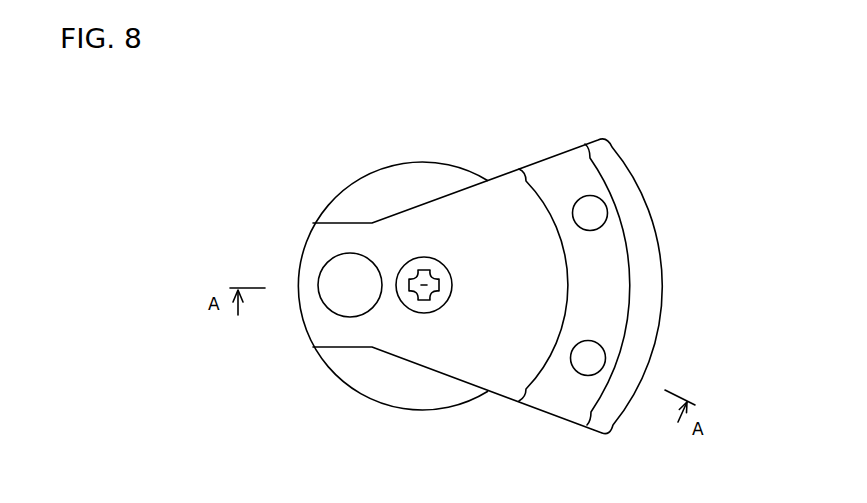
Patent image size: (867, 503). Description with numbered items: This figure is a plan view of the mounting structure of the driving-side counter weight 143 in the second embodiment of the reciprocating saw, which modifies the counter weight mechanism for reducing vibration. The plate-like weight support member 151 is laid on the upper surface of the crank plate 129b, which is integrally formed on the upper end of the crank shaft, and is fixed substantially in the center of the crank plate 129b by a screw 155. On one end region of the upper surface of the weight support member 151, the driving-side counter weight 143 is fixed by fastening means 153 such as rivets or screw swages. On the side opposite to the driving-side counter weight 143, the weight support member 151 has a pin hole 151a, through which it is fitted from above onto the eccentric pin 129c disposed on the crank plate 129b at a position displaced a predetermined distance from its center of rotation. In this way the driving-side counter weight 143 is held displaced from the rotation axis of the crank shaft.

The weight support member 151 is at (481, 192).
The crank plate 129b is at (377, 183).
The eccentric pin 129c is at (338, 273).
The pin hole 151a is at (336, 306).
The screw 155 is at (417, 305).
The driving-side counter weight 143 is at (650, 247).
The fastening means 153 is at (593, 208).